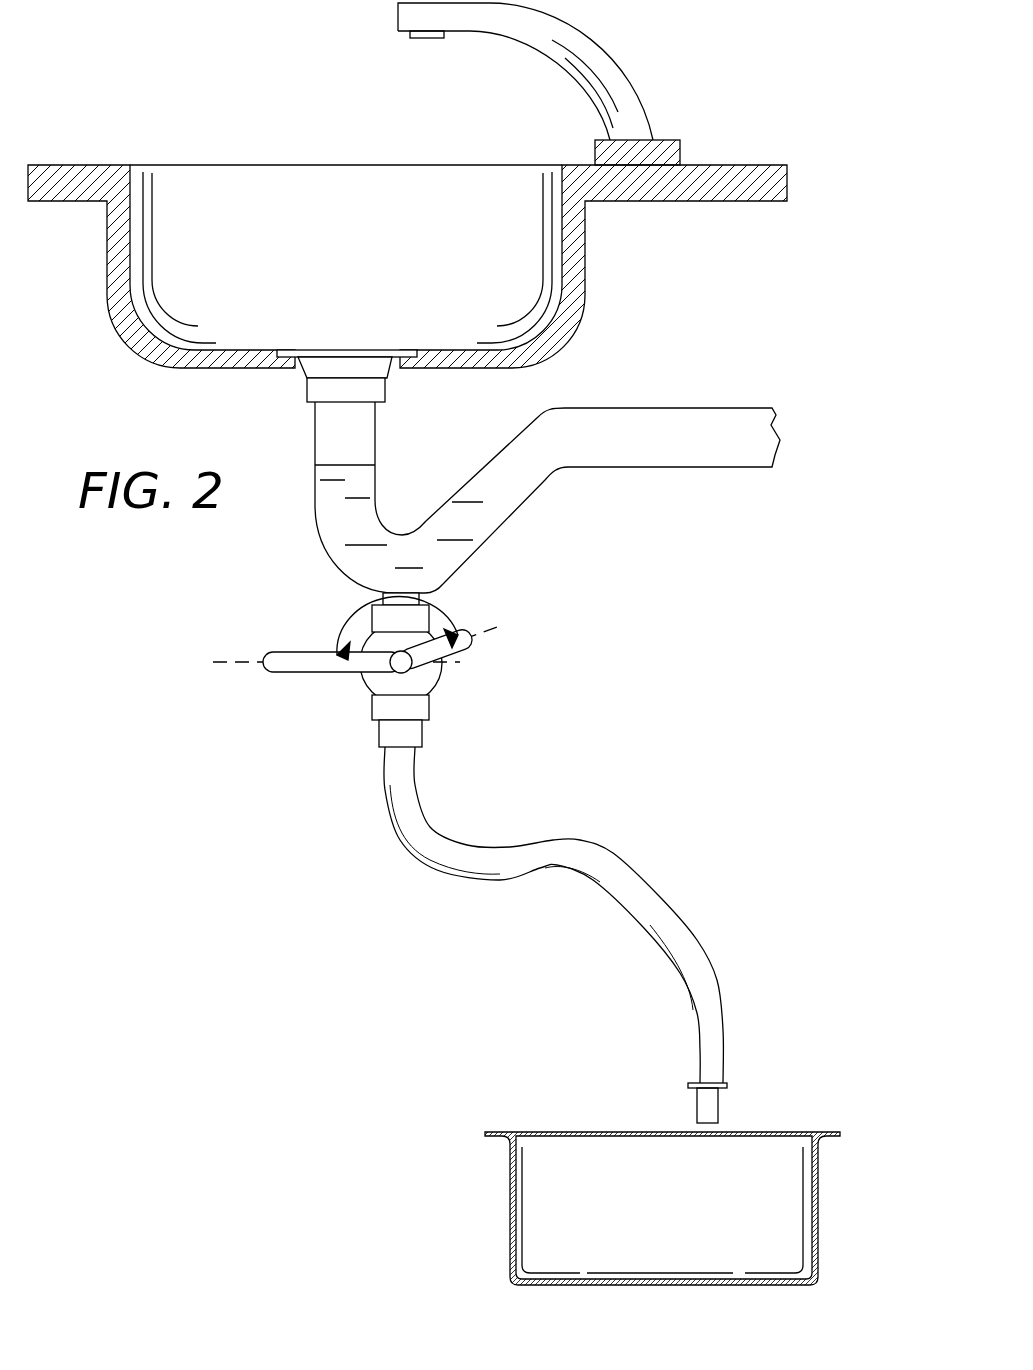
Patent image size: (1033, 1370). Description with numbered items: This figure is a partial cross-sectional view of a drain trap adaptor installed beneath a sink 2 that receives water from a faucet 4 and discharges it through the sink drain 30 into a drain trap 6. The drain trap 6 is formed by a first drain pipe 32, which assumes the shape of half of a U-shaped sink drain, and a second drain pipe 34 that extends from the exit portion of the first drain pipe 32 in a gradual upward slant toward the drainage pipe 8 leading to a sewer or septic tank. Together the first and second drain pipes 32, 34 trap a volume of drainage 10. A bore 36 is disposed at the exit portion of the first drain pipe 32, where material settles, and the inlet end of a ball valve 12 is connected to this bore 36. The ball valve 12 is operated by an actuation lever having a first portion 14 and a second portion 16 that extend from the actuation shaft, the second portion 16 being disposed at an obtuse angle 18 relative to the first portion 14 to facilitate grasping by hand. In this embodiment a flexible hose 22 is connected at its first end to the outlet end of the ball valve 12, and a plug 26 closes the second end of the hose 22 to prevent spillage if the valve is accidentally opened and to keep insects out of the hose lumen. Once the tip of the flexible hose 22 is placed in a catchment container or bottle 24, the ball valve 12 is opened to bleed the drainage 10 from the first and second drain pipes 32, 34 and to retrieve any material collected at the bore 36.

The sink 2 is at (107, 262).
The faucet 4 is at (398, 12).
The drain trap 6 is at (470, 422).
The drainage pipe leading to sewer or septic tank 8 is at (660, 408).
The drainage 10 is at (470, 525).
The ball valve 12 is at (362, 682).
The first portion of lever 14 is at (285, 652).
The second portion of lever 16 is at (476, 632).
The angle between first and second portions of lever 18 is at (453, 630).
The drain tube 22 is at (612, 898).
The catchment basin 24 is at (508, 1172).
The plug 26 is at (697, 1096).
The sink drain 30 is at (358, 350).
The first drain pipe 32 is at (385, 500).
The second drain pipe 34 is at (454, 485).
The bore 36 is at (383, 598).